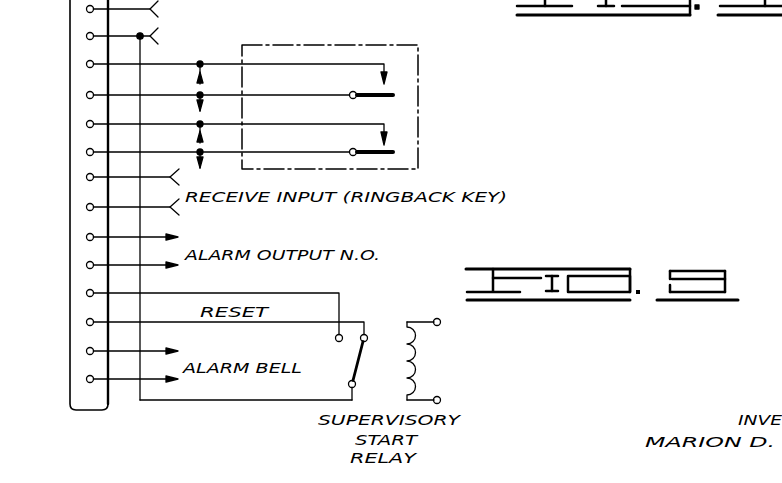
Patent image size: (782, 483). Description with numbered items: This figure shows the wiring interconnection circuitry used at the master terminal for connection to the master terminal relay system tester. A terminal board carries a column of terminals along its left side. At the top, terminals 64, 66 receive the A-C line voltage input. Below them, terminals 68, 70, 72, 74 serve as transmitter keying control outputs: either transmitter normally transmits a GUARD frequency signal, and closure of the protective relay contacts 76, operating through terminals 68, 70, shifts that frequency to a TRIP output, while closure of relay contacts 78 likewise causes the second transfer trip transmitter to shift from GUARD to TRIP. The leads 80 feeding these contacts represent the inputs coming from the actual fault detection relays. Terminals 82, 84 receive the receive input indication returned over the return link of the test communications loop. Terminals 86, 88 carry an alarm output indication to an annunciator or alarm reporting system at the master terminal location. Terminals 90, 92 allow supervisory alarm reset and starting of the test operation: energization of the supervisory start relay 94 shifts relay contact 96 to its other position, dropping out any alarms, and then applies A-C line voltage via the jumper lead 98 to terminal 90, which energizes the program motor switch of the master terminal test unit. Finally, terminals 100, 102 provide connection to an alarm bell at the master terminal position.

The terminal 64 is at (86, 9).
The terminal 66 is at (86, 36).
The terminal 68 is at (86, 64).
The terminal 70 is at (86, 95).
The terminal 72 is at (86, 124).
The terminal 74 is at (86, 152).
The relay contacts 76 is at (393, 93).
The relay contacts 78 is at (393, 150).
The leads 80 is at (200, 105).
The terminal 82 is at (86, 177).
The terminal 84 is at (86, 207).
The terminal 86 is at (86, 237).
The terminal 88 is at (86, 265).
The terminal 90 is at (86, 293).
The terminal 92 is at (86, 322).
The supervisory start relay 94 is at (409, 366).
The relay contact 96 is at (358, 353).
The jumper lead 98 is at (200, 401).
The terminal 100 is at (86, 351).
The terminal 102 is at (86, 379).